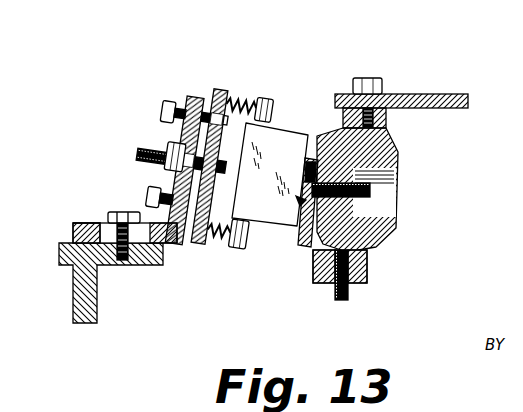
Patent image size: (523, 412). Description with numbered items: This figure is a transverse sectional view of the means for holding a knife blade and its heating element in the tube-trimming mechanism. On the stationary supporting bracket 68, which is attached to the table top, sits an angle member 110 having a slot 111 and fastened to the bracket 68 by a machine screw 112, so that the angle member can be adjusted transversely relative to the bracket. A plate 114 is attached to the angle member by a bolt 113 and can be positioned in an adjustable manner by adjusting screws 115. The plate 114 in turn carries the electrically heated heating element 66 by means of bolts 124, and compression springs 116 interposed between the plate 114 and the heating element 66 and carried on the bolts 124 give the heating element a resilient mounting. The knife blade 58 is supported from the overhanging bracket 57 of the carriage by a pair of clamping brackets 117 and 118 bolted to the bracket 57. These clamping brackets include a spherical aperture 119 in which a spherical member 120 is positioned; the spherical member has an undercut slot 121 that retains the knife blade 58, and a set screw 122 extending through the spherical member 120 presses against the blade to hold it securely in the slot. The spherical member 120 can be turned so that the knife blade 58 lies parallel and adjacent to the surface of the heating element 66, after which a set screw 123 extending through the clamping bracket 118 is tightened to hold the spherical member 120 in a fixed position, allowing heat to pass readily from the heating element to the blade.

The overhanging bracket 57 is at (453, 95).
The knife blade 58 is at (299, 201).
The heating element 66 is at (286, 140).
The supporting bracket 68 is at (78, 312).
The angle member 110 is at (87, 222).
The slot 111 is at (97, 214).
The machine screw 112 is at (128, 213).
The bolt 113 is at (138, 148).
The plate 114 is at (218, 88).
The adjusting screws 115 is at (168, 106).
The compression springs 116 is at (215, 246).
The clamping bracket 117 is at (398, 112).
The clamping bracket 118 is at (370, 252).
The spherical aperture 119 is at (392, 137).
The spherical member 120 is at (396, 226).
The undercut slot 121 is at (312, 205).
The set screw 122 is at (374, 190).
The set screw 123 is at (350, 292).
The bolts 124 is at (267, 98).